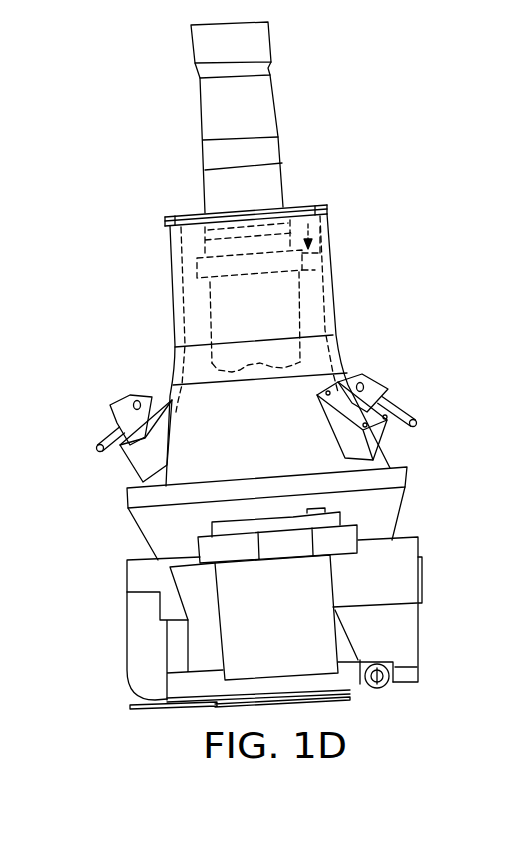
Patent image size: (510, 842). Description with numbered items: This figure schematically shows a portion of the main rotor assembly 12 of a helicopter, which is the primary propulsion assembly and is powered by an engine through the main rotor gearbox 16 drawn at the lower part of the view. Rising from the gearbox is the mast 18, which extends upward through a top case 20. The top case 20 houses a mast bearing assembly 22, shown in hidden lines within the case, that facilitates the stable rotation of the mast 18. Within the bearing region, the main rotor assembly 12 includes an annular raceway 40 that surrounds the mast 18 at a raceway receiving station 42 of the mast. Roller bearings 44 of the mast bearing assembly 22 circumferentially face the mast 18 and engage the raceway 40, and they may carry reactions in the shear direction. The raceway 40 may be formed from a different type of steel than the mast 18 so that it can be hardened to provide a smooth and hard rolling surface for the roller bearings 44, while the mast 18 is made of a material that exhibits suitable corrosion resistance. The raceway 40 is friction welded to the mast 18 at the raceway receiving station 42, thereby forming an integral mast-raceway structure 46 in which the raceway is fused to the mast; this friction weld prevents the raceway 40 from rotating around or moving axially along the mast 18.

The main rotor assembly 12 is at (70, 222).
The main rotor gearbox 16 is at (125, 632).
The mast 18 is at (297, 305).
The top case 20 is at (170, 240).
The mast bearing assembly 22 is at (327, 217).
The annular raceway 40 is at (258, 265).
The raceway receiving station 42 is at (200, 290).
The roller bearings 44 is at (197, 262).
The integral mast-raceway structure 46 is at (297, 290).